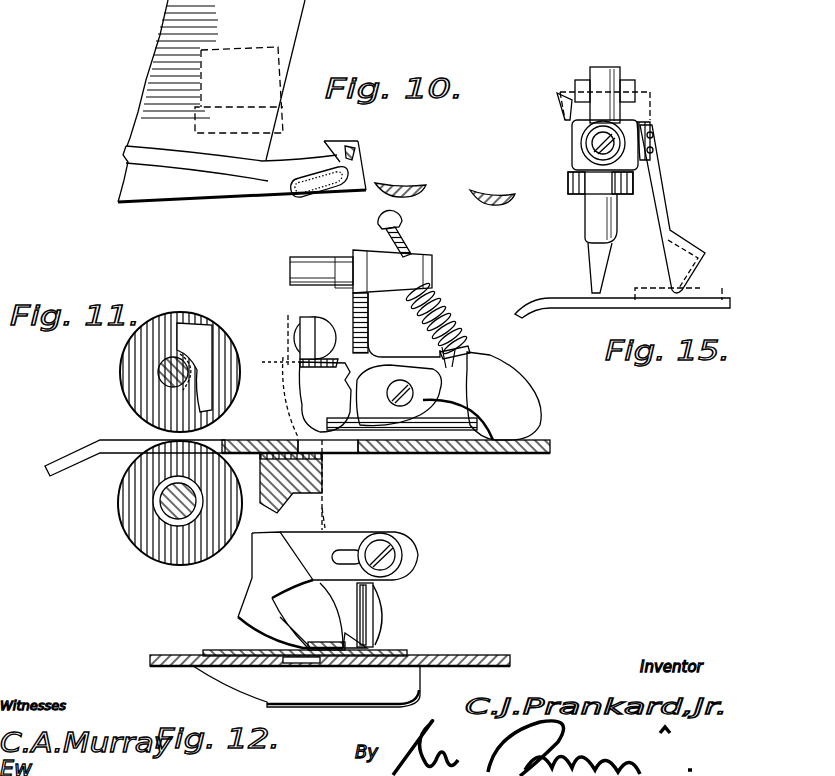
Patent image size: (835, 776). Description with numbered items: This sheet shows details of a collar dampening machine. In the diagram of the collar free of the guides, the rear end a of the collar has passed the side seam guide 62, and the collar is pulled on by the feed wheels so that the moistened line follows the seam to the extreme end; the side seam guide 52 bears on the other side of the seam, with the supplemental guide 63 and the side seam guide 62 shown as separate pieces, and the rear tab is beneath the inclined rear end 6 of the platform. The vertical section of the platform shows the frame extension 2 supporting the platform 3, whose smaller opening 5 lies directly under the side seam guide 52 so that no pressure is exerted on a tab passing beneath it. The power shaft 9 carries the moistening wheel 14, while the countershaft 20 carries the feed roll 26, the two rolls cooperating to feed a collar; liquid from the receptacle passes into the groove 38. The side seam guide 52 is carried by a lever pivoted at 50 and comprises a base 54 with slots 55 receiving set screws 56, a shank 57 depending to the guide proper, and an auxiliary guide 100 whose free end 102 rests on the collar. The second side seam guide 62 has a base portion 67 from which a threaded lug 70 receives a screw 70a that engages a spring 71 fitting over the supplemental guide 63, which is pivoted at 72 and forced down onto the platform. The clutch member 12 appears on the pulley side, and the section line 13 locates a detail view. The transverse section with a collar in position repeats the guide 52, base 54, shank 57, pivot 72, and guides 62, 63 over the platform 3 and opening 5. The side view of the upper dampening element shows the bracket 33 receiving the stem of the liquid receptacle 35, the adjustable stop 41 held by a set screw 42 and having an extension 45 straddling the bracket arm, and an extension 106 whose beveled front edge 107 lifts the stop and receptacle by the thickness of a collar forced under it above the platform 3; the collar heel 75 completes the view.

In FIG. 10, the boot heel 75 is at (150, 128).
In FIG. 10, the rear end of the collar a is at (297, 122).
In FIG. 10, the side seam guide 52 is at (343, 142).
In FIG. 11, the side seam guide 52 is at (324, 397).
In FIG. 12, the side seam guide 52 is at (285, 637).
In FIG. 10, the inclined rear end of the platform 6 is at (330, 196).
In FIG. 15, the inclined rear end of the platform 6 is at (520, 315).
In FIG. 11, the inclined rear end of the platform 6 is at (128, 471).
In FIG. 10, the side seam guide 62 is at (400, 178).
In FIG. 11, the side seam guide 62 is at (398, 430).
In FIG. 12, the side seam guide 62 is at (386, 620).
In FIG. 10, the supplemental guide 63 is at (492, 187).
In FIG. 11, the supplemental guide 63 is at (507, 382).
In FIG. 12, the supplemental guide 63 is at (380, 640).
In FIG. 15, the bracket 33 is at (591, 90).
In FIG. 15, the extension of the stop 45 is at (558, 104).
In FIG. 15, the adjustable stop 41 is at (650, 112).
In FIG. 15, the set screw 42 is at (612, 142).
In FIG. 15, the liquid receptacle 35 is at (588, 215).
In FIG. 11, the liquid receptacle 35 is at (202, 333).
In FIG. 15, the extension 106 is at (655, 220).
In FIG. 15, the beveled front edge 107 is at (684, 287).
In FIG. 15, the platform 3 is at (608, 305).
In FIG. 11, the platform 3 is at (445, 453).
In FIG. 12, the platform 3 is at (500, 656).
In FIG. 11, the feed roll 26 is at (122, 360).
In FIG. 11, the countershaft 20 is at (165, 380).
In FIG. 11, the groove 38 is at (200, 413).
In FIG. 11, the moistening wheel 14 is at (122, 502).
In FIG. 11, the power shaft 9 is at (165, 515).
In FIG. 11, the opening in the platform 5 is at (343, 454).
In FIG. 12, the opening in the platform 5 is at (313, 668).
In FIG. 11, the frame extension 2 is at (268, 506).
In FIG. 11, the clutch member 12 is at (291, 420).
In FIG. 12, the clutch member 12 is at (349, 544).
In FIG. 11, the center line 13 is at (301, 358).
In FIG. 11, the pivot of the lever 50 is at (326, 330).
In FIG. 12, the pivot of the lever 50 is at (252, 568).
In FIG. 11, the base of the side seam guide 54 is at (308, 318).
In FIG. 12, the base of the side seam guide 54 is at (405, 555).
In FIG. 11, the shank 57 is at (300, 373).
In FIG. 12, the shank 57 is at (262, 603).
In FIG. 11, the threaded lug 70 is at (432, 264).
In FIG. 11, the screw 70a is at (408, 240).
In FIG. 11, the base portion of the side seam guide 67 is at (367, 298).
In FIG. 11, the spring 71 is at (443, 311).
In FIG. 11, the pivot of the supplemental guide 72 is at (414, 398).
In FIG. 12, the pivot of the supplemental guide 72 is at (383, 596).
In FIG. 11, the auxiliary guide 100 is at (480, 417).
In FIG. 11, the free end of the auxiliary guide 102 is at (490, 445).
In FIG. 12, the slots 55 is at (352, 556).
In FIG. 12, the set screws 56 is at (397, 546).